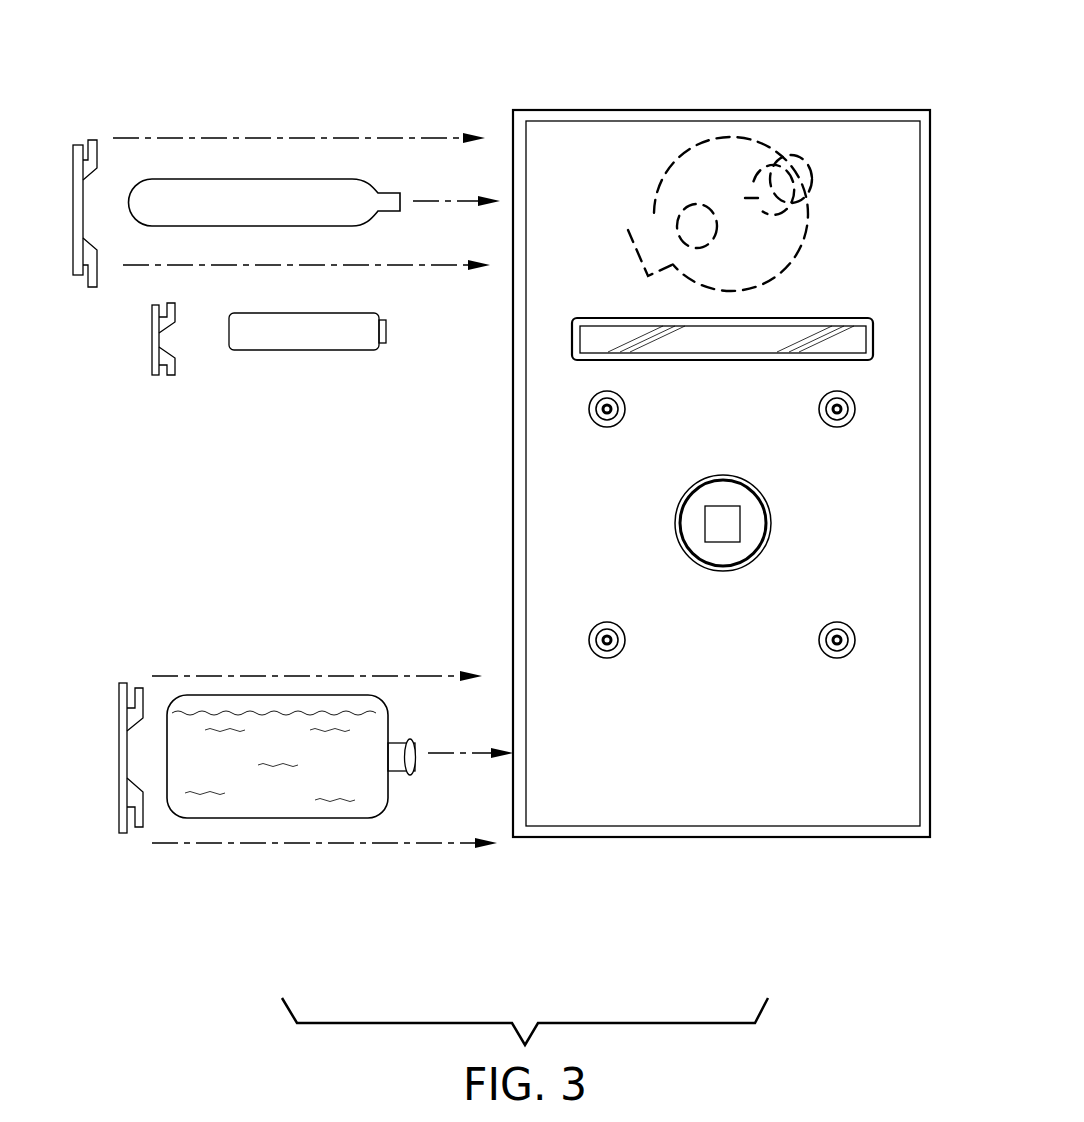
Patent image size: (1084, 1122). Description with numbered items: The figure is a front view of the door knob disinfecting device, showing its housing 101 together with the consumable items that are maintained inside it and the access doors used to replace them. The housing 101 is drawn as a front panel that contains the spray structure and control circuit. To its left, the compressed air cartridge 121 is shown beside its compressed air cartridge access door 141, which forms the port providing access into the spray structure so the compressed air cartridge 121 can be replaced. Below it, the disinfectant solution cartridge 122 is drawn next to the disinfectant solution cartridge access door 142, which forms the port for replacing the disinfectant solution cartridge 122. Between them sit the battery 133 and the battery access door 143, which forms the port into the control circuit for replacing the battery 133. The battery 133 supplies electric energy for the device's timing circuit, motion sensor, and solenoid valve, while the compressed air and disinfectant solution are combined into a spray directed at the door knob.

The housing 101 is at (930, 110).
The compressed air cartridge 121 is at (318, 193).
The disinfectant solution cartridge 122 is at (277, 696).
The battery 133 is at (302, 342).
The compressed air cartridge access door 141 is at (73, 182).
The disinfectant solution cartridge access door 142 is at (119, 761).
The battery access door 143 is at (152, 325).